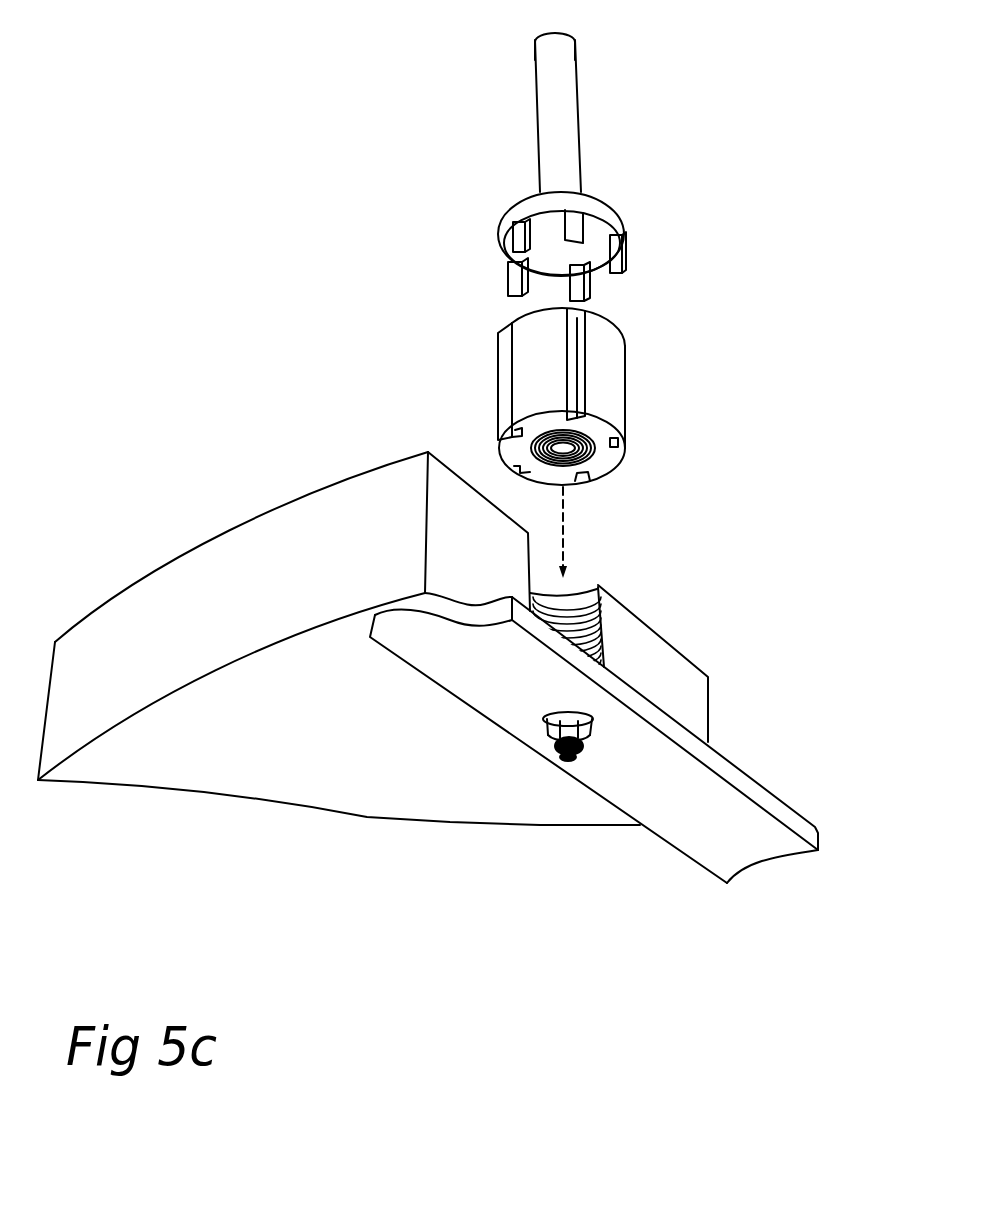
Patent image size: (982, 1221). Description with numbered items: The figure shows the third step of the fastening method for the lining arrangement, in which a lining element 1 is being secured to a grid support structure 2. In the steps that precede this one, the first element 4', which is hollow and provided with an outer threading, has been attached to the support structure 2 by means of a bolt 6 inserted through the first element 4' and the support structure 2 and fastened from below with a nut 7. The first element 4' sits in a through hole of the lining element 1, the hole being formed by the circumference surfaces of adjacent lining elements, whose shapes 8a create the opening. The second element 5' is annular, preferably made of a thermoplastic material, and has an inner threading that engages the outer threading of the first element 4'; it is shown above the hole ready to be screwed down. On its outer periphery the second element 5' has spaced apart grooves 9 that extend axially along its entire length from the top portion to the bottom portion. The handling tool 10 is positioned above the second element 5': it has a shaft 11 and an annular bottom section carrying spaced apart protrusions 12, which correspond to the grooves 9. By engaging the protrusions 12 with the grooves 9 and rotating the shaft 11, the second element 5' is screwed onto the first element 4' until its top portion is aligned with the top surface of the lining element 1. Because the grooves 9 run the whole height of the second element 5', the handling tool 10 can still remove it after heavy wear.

The lining element 1 is at (678, 682).
The support structure 2 is at (750, 770).
The first element 4' is at (639, 625).
The second element 5' is at (616, 396).
The bolt 6 is at (568, 762).
The nut 7 is at (566, 716).
The shape 8a is at (598, 591).
The grooves 9 is at (572, 343).
The handling tool 10 is at (565, 108).
The shaft 11 is at (555, 58).
The protrusions 12 is at (577, 218).